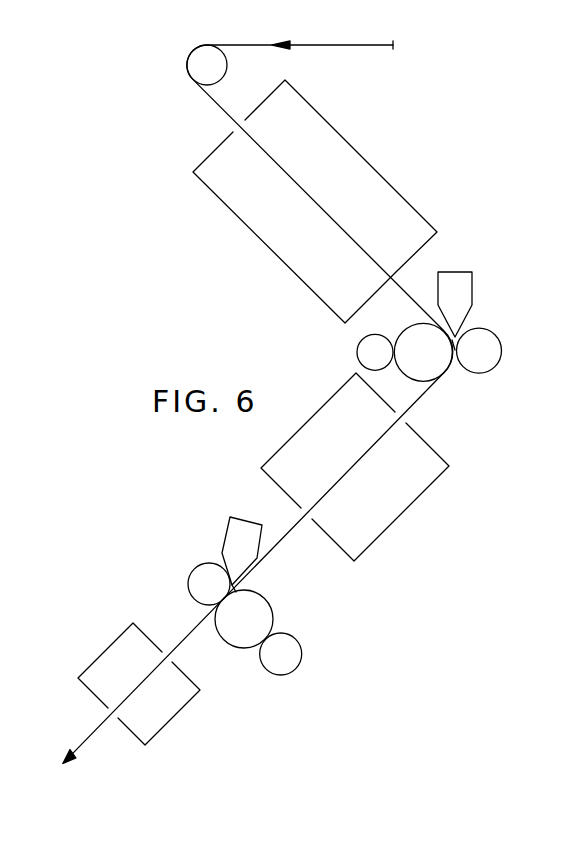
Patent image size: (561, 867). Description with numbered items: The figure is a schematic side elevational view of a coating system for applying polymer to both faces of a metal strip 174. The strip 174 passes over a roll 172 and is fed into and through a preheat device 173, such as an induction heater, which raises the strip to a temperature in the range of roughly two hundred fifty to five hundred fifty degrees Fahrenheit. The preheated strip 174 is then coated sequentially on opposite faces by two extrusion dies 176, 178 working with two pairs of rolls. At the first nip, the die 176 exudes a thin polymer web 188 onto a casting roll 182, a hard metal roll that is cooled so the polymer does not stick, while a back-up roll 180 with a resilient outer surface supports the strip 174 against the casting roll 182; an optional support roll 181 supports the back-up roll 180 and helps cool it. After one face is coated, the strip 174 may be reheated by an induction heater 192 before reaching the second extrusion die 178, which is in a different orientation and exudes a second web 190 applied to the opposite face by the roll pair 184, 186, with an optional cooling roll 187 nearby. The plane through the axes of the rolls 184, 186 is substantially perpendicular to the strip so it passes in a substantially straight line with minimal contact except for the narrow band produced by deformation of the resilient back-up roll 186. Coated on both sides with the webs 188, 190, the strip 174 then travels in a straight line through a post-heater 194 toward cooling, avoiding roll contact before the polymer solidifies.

The roll 172 is at (189, 60).
The preheat device 173 is at (370, 162).
The metal strip 174 is at (318, 45).
The extrusion die 176 is at (471, 283).
The extrusion die 178 is at (229, 519).
The back-up roll 180 is at (422, 323).
The support roll 181 is at (357, 348).
The casting roll 182 is at (498, 365).
The roll 184 is at (189, 580).
The back-up roll 186 is at (272, 610).
The cooling roll 187 is at (296, 670).
The web 188 is at (455, 337).
The web 190 is at (240, 582).
The induction heater 192 is at (407, 503).
The post-heater 194 is at (178, 718).